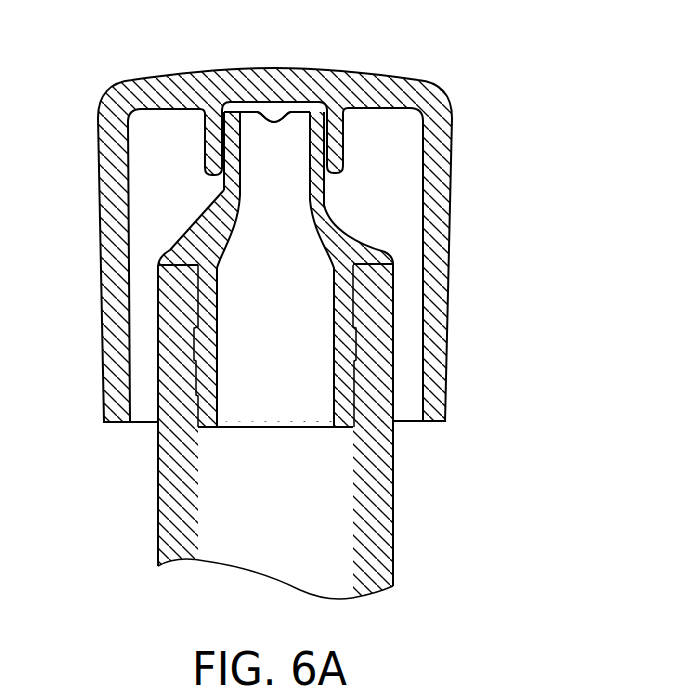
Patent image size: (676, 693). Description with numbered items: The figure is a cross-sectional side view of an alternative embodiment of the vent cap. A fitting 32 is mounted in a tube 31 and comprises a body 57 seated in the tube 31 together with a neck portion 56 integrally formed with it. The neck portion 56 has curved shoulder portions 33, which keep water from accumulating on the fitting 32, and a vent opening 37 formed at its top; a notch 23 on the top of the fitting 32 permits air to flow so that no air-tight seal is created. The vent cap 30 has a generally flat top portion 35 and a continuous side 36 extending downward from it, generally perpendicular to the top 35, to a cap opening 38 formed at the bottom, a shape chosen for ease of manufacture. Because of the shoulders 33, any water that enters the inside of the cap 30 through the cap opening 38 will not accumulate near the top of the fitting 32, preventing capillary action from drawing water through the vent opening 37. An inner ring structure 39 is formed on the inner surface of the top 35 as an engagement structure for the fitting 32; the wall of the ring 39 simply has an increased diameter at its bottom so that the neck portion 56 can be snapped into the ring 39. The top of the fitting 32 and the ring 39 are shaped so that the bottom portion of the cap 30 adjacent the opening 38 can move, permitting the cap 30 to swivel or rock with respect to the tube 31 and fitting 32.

The notch 23 is at (277, 122).
The vent cap 30 is at (452, 168).
The tube 31 is at (393, 507).
The fitting 32 is at (392, 265).
The curved shoulder portions 33 is at (208, 223).
The top portion 35 is at (318, 70).
The side 36 is at (98, 324).
The vent opening 37 is at (220, 147).
The cap opening 38 is at (410, 422).
The inner ring structure 39 is at (205, 152).
The neck portion 56 is at (325, 181).
The body 57 is at (218, 327).